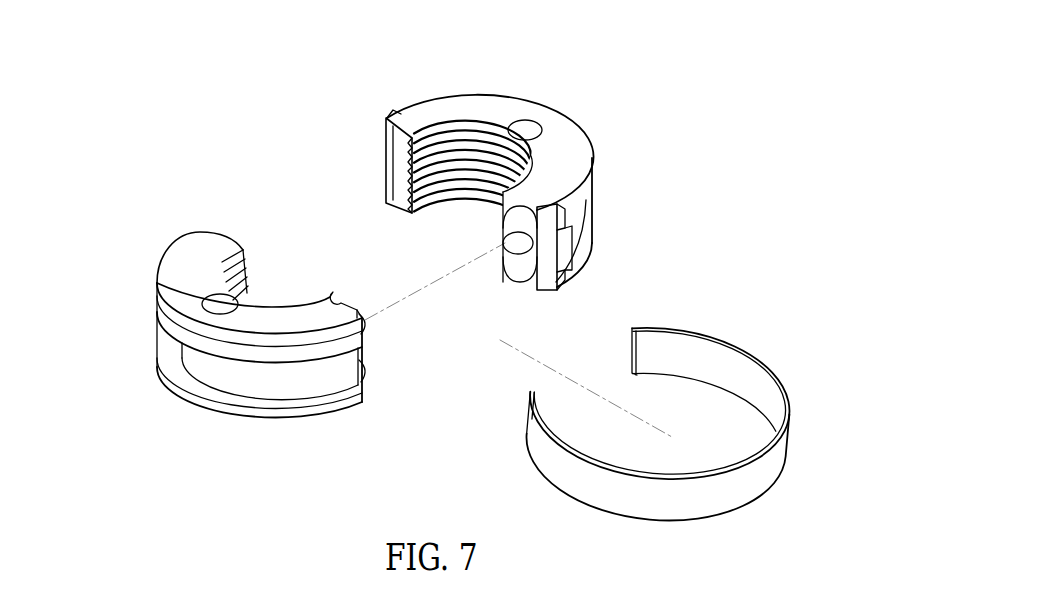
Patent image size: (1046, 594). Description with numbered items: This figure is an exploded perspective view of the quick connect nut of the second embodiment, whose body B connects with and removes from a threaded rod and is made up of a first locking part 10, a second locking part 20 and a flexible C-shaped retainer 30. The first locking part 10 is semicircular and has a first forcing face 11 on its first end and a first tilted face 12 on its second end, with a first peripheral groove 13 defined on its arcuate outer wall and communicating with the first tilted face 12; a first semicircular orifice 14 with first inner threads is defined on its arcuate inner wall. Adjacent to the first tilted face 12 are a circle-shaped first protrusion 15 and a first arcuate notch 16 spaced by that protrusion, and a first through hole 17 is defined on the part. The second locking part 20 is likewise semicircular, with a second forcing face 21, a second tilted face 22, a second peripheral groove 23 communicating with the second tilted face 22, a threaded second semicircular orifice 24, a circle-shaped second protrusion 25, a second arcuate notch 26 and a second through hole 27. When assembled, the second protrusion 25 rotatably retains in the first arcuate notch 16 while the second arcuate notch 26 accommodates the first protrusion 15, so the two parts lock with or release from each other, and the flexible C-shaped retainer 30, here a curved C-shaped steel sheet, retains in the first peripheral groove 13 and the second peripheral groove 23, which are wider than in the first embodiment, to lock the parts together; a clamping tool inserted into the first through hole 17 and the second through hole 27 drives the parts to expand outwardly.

The first locking part 10 is at (197, 385).
The first forcing face 11 is at (207, 233).
The first tilted face 12 is at (366, 322).
The first peripheral groove 13 is at (193, 363).
The first semicircular orifice 14 is at (243, 290).
The first protrusion 15 is at (363, 317).
The first arcuate notch 16 is at (334, 300).
The first through hole 17 is at (216, 305).
The second locking part 20 is at (555, 143).
The second forcing face 21 is at (388, 133).
The second tilted face 22 is at (553, 276).
The second peripheral groove 23 is at (583, 234).
The second semicircular orifice 24 is at (472, 157).
The second protrusion 25 is at (507, 218).
The second arcuate notch 26 is at (518, 243).
The second through hole 27 is at (527, 128).
The flexible C-shaped retainer 30 is at (742, 482).
The body B is at (688, 134).